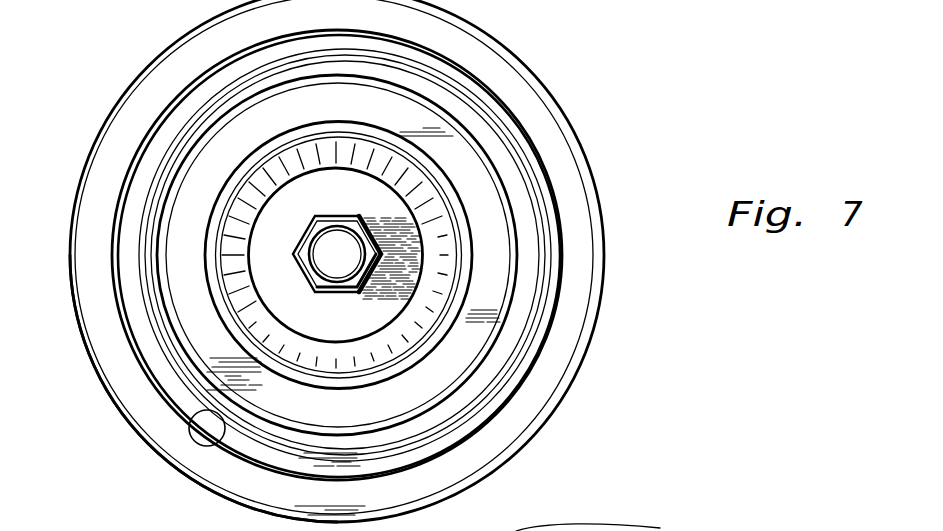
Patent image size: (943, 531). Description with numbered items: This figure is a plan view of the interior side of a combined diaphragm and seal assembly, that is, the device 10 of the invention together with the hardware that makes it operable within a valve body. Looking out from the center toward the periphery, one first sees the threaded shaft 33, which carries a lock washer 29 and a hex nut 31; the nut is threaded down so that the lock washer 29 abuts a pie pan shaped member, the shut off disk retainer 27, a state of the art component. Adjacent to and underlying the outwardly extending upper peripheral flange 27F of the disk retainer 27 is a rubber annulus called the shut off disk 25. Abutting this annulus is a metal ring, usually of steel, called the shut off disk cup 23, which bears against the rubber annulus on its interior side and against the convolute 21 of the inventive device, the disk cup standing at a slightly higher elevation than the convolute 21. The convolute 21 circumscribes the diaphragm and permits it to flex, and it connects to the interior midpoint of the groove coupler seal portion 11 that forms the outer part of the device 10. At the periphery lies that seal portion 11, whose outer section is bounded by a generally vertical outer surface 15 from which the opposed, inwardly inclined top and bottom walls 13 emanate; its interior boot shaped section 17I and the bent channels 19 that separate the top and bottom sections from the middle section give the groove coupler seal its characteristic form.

The device 10 is at (614, 107).
The groove coupler seal portion 11 is at (578, 277).
The top and bottom walls 13 is at (513, 428).
The outer surface 15 is at (149, 443).
The interior boot section 17I is at (203, 480).
The bent channels 19 is at (492, 97).
The convolute section 21 is at (505, 358).
The shut off disk cup 23 is at (507, 312).
The shut off disk 25 is at (503, 205).
The shut off disk retainer 27 is at (280, 212).
The upper peripheral flange 27F is at (222, 185).
The lock washer 29 is at (340, 213).
The hex nut 31 is at (338, 294).
The threaded shaft 33 is at (350, 267).